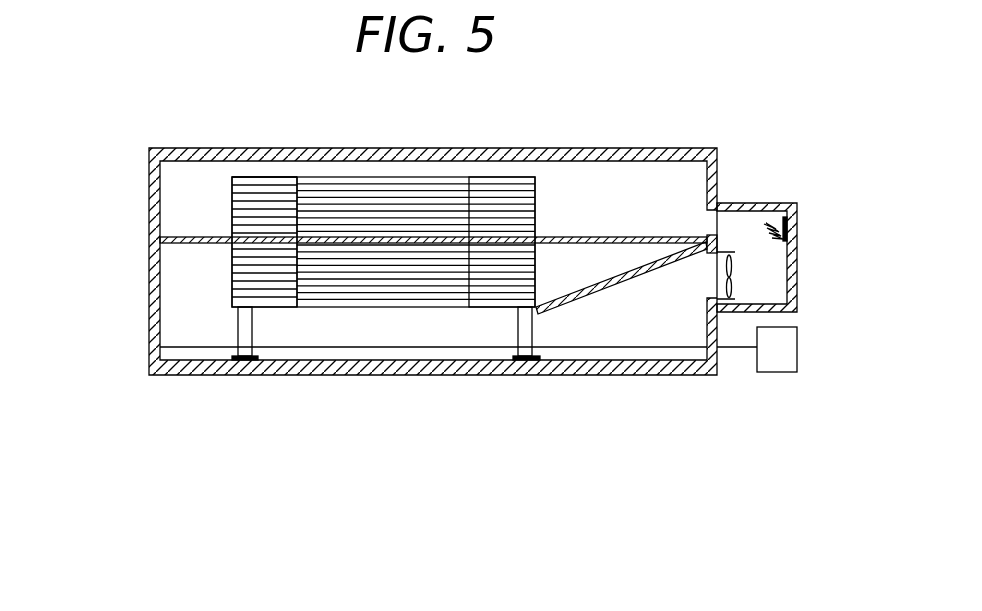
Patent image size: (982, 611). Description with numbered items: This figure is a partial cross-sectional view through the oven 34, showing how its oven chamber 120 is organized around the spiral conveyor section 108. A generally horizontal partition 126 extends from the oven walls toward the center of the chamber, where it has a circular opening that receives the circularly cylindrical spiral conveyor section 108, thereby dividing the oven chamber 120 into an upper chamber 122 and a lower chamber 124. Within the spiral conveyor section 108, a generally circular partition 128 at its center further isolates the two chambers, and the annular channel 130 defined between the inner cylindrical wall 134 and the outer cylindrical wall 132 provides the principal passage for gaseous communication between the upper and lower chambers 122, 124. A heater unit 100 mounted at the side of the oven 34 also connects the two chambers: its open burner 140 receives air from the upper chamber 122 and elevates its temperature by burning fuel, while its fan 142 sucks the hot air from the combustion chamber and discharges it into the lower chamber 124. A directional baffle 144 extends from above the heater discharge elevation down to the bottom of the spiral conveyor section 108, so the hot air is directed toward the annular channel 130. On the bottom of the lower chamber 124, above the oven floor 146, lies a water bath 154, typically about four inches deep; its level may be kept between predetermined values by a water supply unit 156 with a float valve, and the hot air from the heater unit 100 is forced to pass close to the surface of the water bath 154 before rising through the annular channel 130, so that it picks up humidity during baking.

The oven 34 is at (486, 144).
The heater unit 100 is at (797, 258).
The spiral conveyor section 108 is at (512, 197).
The oven chamber 120 is at (643, 183).
The upper chamber 122 is at (175, 193).
The lower chamber 124 is at (175, 305).
The horizontal partition 126 is at (175, 238).
The circular partition 128 is at (338, 237).
The annular channel 130 is at (247, 185).
The outer cylindrical wall 132 is at (226, 179).
The inner cylindrical wall 134 is at (297, 185).
The open burner 140 is at (784, 228).
The fan 142 is at (733, 282).
The directional baffle 144 is at (620, 278).
The bottom wall 146 is at (490, 372).
The water bath 154 is at (175, 351).
The control unit 156 is at (787, 348).